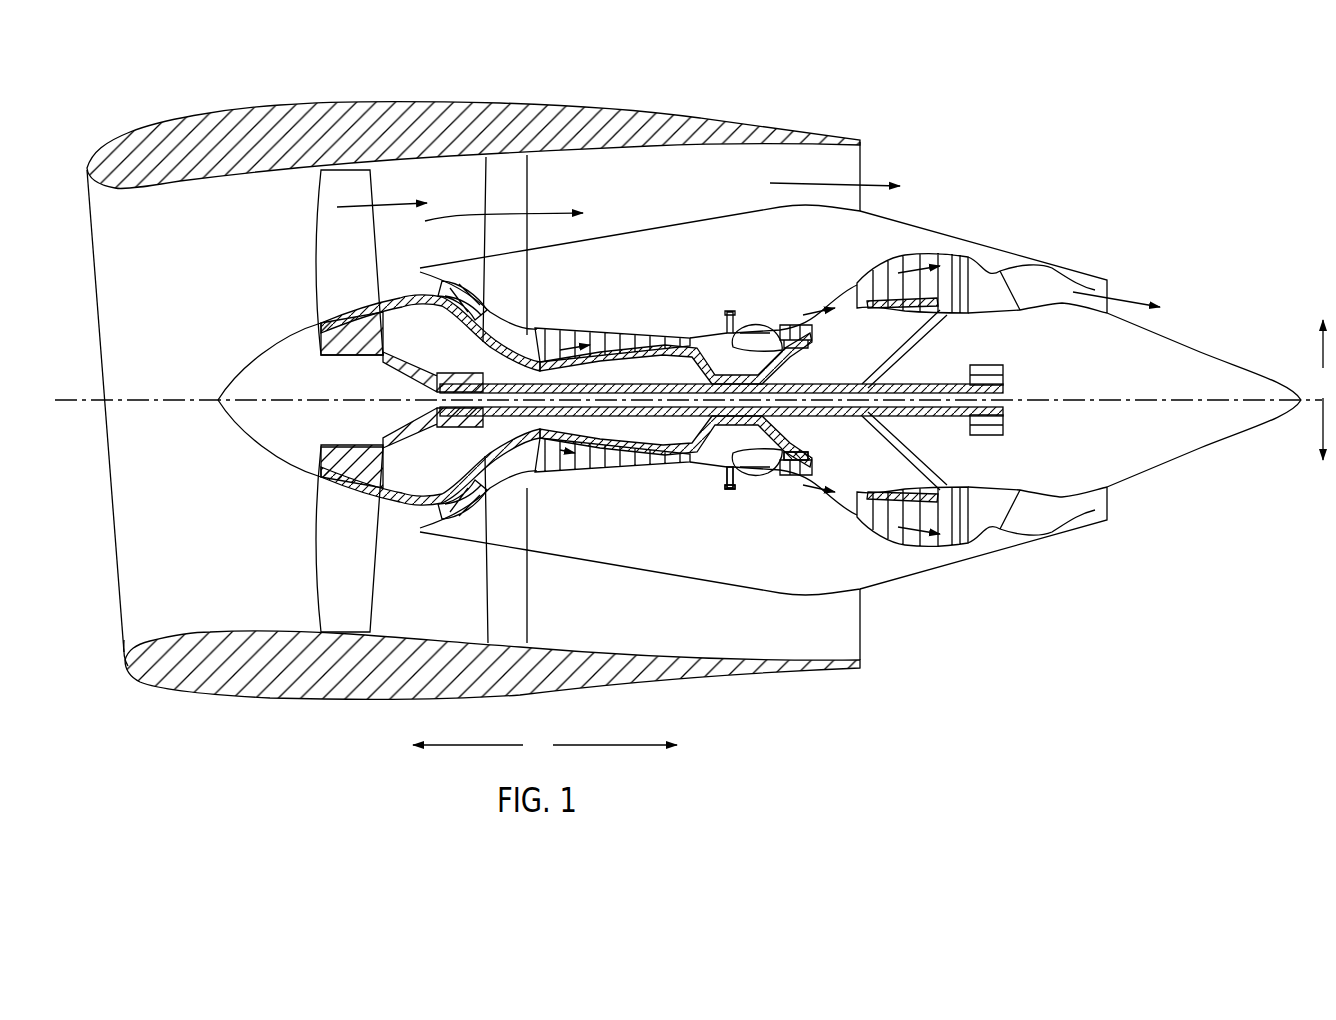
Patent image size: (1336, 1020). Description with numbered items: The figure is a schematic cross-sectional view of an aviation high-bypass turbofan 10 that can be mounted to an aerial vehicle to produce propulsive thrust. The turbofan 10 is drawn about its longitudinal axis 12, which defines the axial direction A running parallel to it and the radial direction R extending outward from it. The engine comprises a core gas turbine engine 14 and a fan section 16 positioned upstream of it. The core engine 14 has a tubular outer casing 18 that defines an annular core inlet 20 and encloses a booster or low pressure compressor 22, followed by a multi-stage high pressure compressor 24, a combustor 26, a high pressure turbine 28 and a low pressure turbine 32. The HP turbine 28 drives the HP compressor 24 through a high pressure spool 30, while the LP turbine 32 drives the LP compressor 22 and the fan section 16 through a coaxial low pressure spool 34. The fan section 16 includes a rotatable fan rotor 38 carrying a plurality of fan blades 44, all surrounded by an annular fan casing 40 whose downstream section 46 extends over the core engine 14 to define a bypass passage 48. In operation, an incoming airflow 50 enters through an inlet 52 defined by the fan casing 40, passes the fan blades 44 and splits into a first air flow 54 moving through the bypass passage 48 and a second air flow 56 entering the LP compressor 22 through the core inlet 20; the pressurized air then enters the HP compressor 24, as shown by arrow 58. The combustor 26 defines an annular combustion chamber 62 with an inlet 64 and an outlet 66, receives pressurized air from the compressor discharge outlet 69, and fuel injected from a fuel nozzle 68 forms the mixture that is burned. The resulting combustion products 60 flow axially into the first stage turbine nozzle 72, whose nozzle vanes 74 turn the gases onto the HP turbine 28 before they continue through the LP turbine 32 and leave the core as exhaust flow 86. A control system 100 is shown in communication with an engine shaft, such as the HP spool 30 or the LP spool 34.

The turbofan 10 is at (1015, 117).
The longitudinal axis 12 is at (1040, 397).
The core gas turbine engine 14 is at (750, 268).
The fan section 16 is at (358, 82).
The tubular outer casing 18 is at (700, 580).
The annular core inlet 20 is at (428, 516).
The low pressure compressor 22 is at (478, 490).
The high pressure compressor 24 is at (560, 473).
The combustor 26 is at (743, 490).
The high pressure turbine 28 is at (810, 483).
The high pressure spool 30 is at (787, 371).
The low pressure turbine 32 is at (942, 547).
The low pressure spool 34 is at (483, 380).
The fan rotor 38 is at (380, 360).
The fan casing 40 is at (330, 698).
The fan blades 44 is at (318, 580).
The downstream section 46 is at (700, 118).
The bypass passage 48 is at (672, 204).
The incoming airflow 50 is at (120, 400).
The inlet 52 is at (122, 630).
The first air flow 54 is at (337, 207).
The second air flow 56 is at (415, 283).
The airflow entering the HP compressor 58 is at (513, 347).
The combustion products 60 is at (787, 316).
The annular combustion chamber 62 is at (747, 487).
The inlet 64 is at (721, 322).
The outlet 66 is at (780, 322).
The fuel nozzle 68 is at (724, 311).
The high pressure compressor discharge outlet 69 is at (720, 467).
The first stage turbine nozzle 72 is at (767, 483).
The nozzle vanes 74 is at (760, 454).
The exhaust flow 86 is at (1123, 298).
The control system 100 is at (1003, 434).